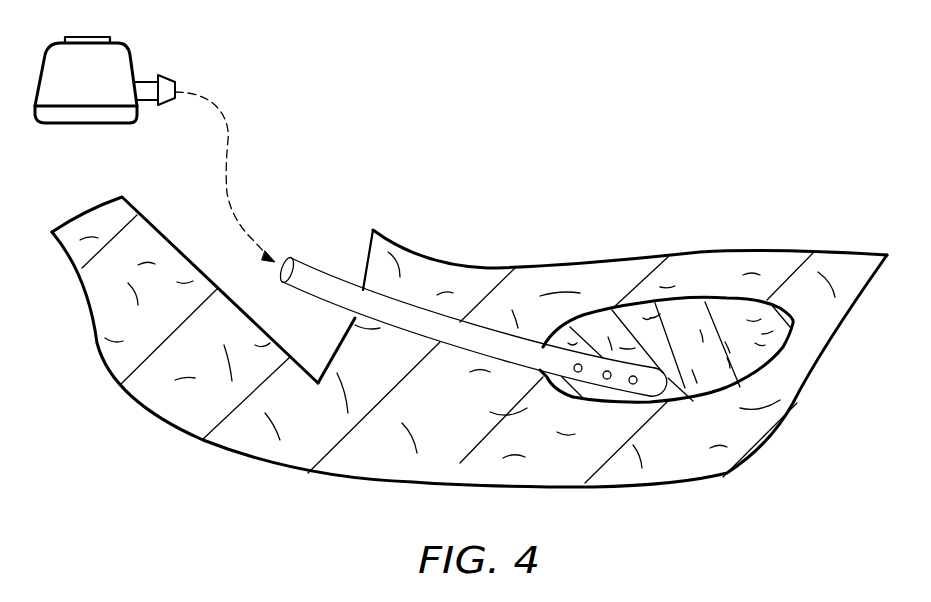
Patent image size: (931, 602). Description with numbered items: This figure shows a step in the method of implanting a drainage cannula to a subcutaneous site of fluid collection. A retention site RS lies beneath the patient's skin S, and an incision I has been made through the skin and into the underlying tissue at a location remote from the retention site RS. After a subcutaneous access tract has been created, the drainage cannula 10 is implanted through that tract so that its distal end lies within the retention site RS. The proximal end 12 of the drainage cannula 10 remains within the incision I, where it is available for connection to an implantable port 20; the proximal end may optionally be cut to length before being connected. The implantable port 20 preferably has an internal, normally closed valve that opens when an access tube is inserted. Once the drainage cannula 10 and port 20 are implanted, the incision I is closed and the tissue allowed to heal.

The drainage cannula 10 is at (313, 278).
The proximal end 12 is at (280, 277).
The implantable port 20 is at (127, 50).
The incision I is at (168, 222).
The skin S is at (725, 250).
The retention site RS is at (740, 357).